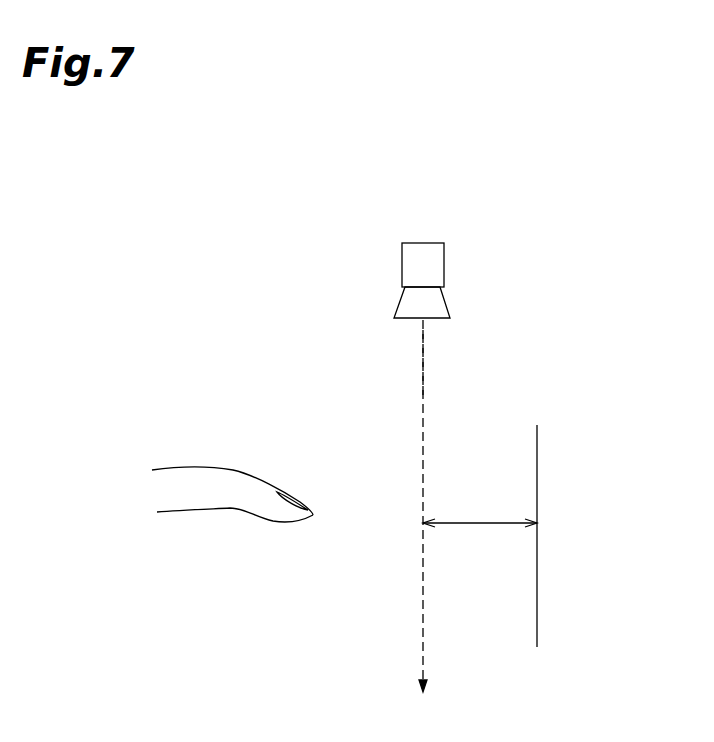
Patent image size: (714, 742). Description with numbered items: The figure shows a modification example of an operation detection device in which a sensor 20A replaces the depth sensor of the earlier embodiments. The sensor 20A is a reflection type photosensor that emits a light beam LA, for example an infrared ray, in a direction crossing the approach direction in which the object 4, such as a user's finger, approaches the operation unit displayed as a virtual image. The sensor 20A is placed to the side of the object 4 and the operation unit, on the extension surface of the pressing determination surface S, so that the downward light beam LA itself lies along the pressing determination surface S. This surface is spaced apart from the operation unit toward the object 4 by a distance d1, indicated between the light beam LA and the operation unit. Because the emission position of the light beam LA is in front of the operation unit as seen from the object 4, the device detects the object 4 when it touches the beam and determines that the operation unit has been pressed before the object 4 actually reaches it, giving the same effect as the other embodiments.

The sensor 20A is at (432, 243).
The light beam LA is at (425, 365).
The pressing determination surface S is at (425, 390).
The distance d1 is at (480, 511).
The object 4 is at (235, 470).